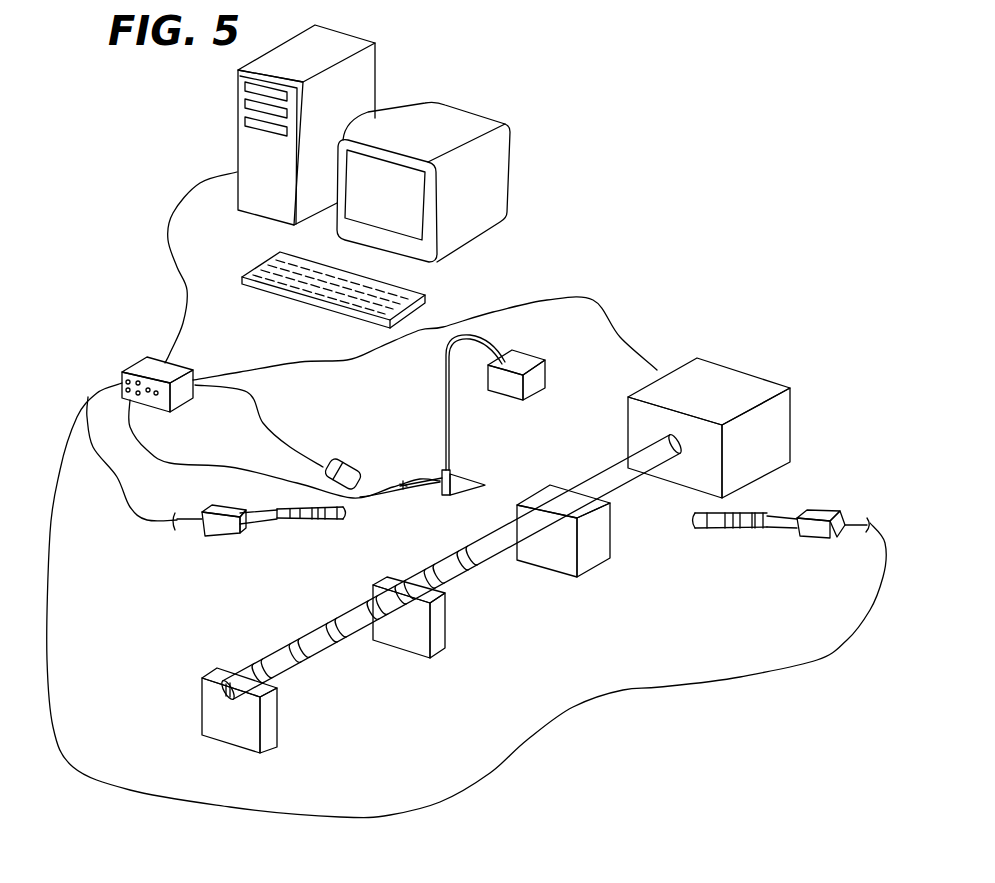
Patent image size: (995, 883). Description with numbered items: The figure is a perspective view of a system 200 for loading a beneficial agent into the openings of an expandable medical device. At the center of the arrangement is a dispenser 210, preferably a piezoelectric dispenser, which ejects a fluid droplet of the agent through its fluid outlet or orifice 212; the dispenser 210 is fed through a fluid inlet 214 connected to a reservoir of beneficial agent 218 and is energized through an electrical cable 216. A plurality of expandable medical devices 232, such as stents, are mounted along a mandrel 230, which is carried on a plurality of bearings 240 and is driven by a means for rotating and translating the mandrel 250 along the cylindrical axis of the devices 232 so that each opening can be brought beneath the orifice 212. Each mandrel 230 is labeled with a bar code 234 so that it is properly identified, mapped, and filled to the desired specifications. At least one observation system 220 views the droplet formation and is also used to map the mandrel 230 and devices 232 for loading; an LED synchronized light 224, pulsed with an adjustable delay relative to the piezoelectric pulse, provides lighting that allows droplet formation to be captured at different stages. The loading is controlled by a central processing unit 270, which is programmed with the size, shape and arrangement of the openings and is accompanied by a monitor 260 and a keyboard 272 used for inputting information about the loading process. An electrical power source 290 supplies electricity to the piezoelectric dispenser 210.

The system 200 is at (663, 268).
The dispenser 210 is at (455, 470).
The fluid outlet or orifice 212 is at (440, 496).
The fluid inlet 214 is at (448, 455).
The electrical cable 216 is at (418, 476).
The reservoir of beneficial agent 218 is at (550, 372).
The observation system 220 is at (227, 536).
The LED synchronized light 224 is at (352, 460).
The mandrel 230 is at (388, 586).
The expandable medical devices 232 is at (490, 563).
The bar code 234 is at (223, 687).
The bearings 240 is at (263, 755).
The means for rotating and translating the mandrel 250 is at (790, 437).
The monitor 260 is at (505, 186).
The central processing unit 270 is at (245, 148).
The keyboard 272 is at (258, 267).
The electrical power source 290 is at (130, 366).